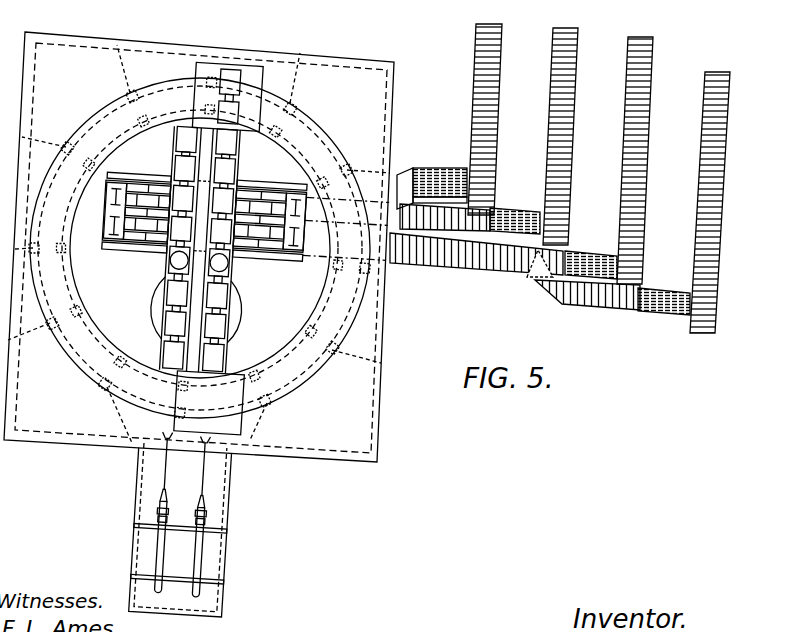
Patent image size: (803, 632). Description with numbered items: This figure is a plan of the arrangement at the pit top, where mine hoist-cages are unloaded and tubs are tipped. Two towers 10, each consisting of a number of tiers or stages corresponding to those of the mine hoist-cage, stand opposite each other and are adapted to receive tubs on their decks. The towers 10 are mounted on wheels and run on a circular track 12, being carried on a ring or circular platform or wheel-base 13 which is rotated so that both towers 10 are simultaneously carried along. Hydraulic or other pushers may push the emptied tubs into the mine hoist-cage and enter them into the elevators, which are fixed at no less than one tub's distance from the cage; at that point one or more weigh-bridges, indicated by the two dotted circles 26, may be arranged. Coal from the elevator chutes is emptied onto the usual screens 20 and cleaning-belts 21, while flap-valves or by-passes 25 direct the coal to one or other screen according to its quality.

The tower 10 is at (250, 73).
The circular track 12 is at (318, 126).
The ring or circular platform or wheel-base 13 is at (339, 326).
The screen 20 is at (440, 173).
The cleaning-belt 21 is at (505, 141).
The flap-valve or by-pass 25 is at (398, 180).
The weigh-bridge 26 is at (172, 263).